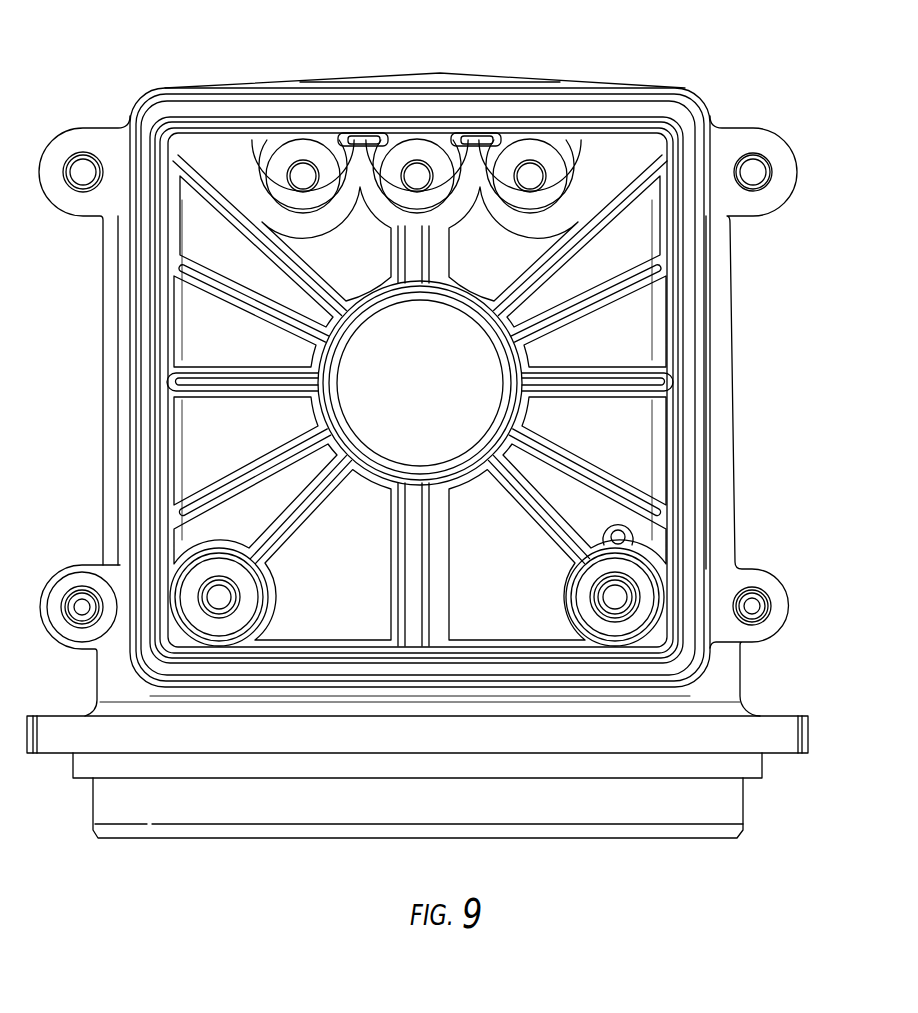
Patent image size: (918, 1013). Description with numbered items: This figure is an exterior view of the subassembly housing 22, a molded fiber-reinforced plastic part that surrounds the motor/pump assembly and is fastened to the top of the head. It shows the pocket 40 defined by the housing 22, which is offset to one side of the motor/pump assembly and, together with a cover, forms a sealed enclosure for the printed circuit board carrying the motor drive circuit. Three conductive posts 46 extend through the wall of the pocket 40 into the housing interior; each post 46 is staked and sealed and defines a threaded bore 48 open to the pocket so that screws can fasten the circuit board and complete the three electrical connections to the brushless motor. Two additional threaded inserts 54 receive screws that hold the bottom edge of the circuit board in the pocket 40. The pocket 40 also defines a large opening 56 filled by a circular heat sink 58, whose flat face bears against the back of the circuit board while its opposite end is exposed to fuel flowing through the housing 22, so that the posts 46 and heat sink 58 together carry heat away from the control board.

The subassembly housing 22 is at (768, 673).
The pocket 40 is at (587, 348).
The conductive posts 46 is at (507, 222).
The threaded bore 48 is at (530, 176).
The threaded inserts 54 is at (219, 596).
The opening 56 is at (412, 500).
The heat sink 58 is at (335, 400).